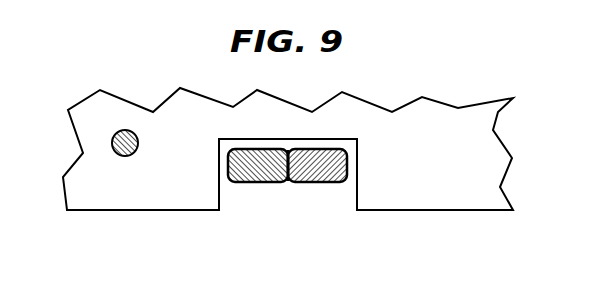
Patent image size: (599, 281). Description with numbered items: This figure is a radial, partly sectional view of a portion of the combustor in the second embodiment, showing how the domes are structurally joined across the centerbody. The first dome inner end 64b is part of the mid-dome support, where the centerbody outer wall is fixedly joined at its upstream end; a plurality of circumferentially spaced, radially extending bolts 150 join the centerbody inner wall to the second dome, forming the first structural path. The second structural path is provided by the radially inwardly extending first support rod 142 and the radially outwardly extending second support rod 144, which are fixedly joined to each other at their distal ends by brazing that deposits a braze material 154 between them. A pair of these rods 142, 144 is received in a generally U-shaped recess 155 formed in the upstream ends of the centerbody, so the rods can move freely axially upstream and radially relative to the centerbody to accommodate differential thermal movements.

The first dome inner end 64b is at (402, 138).
The bolt 150 is at (127, 130).
The U-shaped recess 155 is at (219, 202).
The first support rod 142 is at (270, 182).
The braze material 154 is at (288, 182).
The second support rod 144 is at (328, 182).